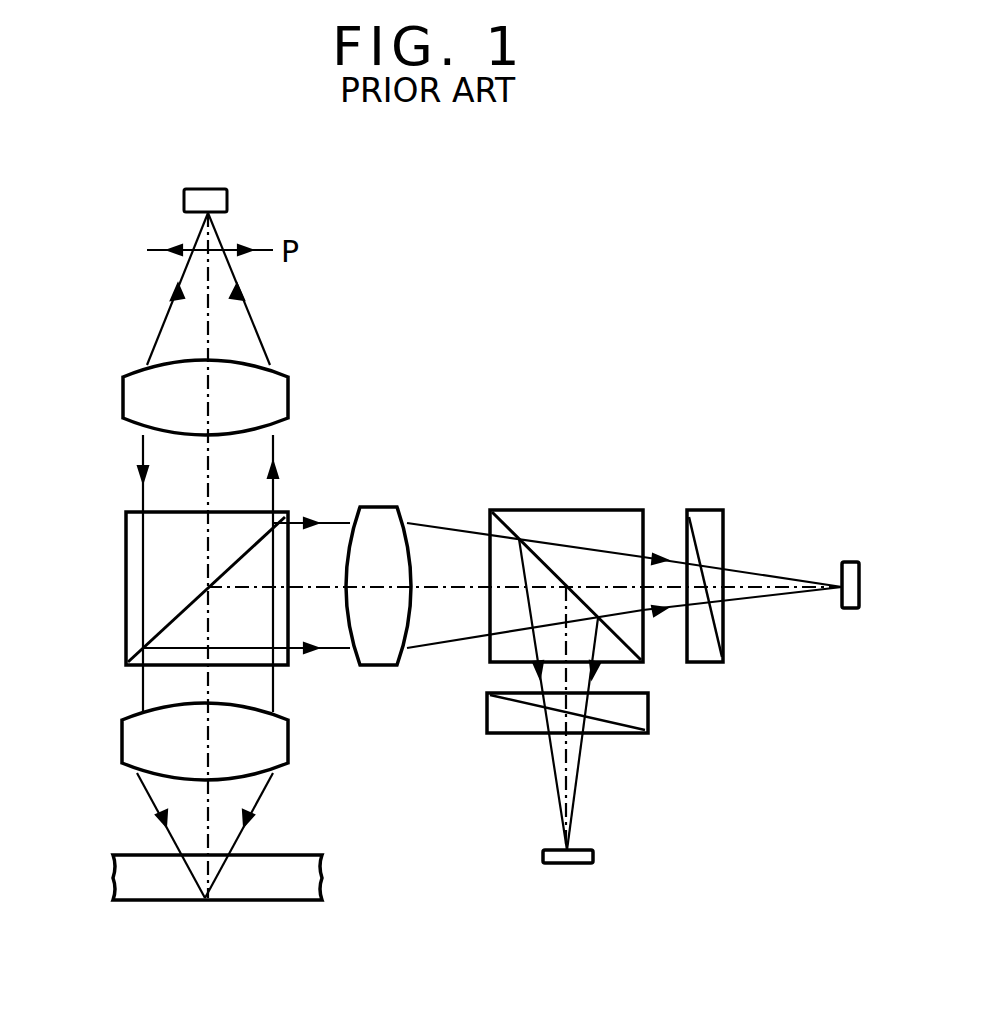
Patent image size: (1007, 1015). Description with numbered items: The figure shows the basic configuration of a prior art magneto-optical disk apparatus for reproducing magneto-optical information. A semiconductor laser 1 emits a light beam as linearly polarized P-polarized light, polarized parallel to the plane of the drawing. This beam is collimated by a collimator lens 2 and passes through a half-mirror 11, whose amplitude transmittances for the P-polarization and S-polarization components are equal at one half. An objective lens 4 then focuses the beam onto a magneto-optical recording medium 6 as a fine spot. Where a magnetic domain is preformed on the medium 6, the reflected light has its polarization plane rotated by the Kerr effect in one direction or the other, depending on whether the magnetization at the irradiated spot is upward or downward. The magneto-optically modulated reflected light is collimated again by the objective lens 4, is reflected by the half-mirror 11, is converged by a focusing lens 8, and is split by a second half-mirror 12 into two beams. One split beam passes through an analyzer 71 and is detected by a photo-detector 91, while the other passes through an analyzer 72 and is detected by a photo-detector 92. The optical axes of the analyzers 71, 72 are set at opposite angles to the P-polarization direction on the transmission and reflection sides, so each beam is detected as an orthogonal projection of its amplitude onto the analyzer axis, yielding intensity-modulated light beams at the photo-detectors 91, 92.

The semiconductor laser 1 is at (184, 200).
The collimator lens 2 is at (142, 375).
The objective lens 4 is at (130, 743).
The magneto-optical recording medium 6 is at (118, 867).
The focusing lens 8 is at (405, 512).
The half-mirror 11 is at (125, 528).
The half-mirror 12 is at (624, 508).
The analyzer 71 is at (725, 510).
The analyzer 72 is at (648, 710).
The photo-detector 91 is at (851, 562).
The photo-detector 92 is at (593, 858).